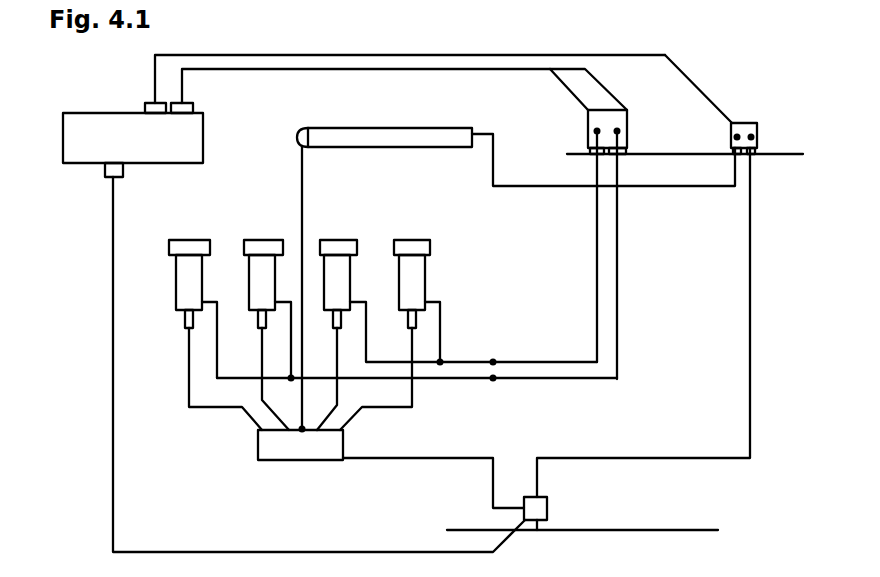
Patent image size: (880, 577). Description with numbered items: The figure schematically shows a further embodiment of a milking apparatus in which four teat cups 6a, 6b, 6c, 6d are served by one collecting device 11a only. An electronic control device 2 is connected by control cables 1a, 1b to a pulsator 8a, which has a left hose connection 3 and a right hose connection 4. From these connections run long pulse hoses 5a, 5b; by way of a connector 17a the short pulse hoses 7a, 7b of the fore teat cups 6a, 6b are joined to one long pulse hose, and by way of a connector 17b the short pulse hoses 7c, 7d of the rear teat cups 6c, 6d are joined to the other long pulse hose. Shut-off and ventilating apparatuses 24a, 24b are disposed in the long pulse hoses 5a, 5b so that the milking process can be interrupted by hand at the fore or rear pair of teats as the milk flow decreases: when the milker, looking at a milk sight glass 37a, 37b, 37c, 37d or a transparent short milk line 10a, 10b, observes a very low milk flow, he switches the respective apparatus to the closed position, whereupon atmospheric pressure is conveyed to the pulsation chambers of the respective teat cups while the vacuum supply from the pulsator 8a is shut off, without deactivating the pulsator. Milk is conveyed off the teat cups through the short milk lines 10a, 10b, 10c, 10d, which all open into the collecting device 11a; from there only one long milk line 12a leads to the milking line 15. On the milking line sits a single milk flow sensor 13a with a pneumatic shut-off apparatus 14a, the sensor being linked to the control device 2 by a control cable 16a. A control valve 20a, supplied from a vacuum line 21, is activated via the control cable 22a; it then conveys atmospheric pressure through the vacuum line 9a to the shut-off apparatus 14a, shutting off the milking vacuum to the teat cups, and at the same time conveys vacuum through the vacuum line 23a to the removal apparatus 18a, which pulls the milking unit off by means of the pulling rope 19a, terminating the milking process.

The electronic control device 2 is at (94, 120).
The control cable 22a is at (697, 87).
The control cable 1b is at (600, 85).
The control cable 1a is at (579, 102).
The hose connection pulsator L 3 is at (588, 132).
The hose connection pulsator R 4 is at (626, 151).
The pulsator 8a is at (590, 153).
The long pulse hose 5a is at (595, 218).
The long pulse hose 5b is at (615, 228).
The vacuum line 21 is at (772, 150).
The control valve 20a is at (743, 122).
The vacuum line 23a is at (494, 157).
The removal apparatus 18a is at (325, 135).
The pulling rope 19a is at (305, 198).
The teat cup 6a is at (190, 247).
The teat cup 6b is at (264, 247).
The teat cup 6c is at (339, 247).
The teat cup 6d is at (412, 247).
The milk sight glass 37a is at (184, 316).
The milk sight glass 37b is at (257, 317).
The milk sight glass 37c is at (332, 318).
The milk sight glass 37d is at (407, 317).
The short pulse hose 7a is at (217, 314).
The short pulse hose 7b is at (292, 318).
The short pulse hose 7c is at (367, 324).
The short pulse hose 7d is at (441, 326).
The connector pulse hose 17a is at (292, 381).
The connector pulse hose 17b is at (441, 365).
The shut-off and ventilation apparatus 24a is at (494, 360).
The shut-off and ventilation apparatus 24b is at (495, 381).
The short milk line 10a is at (186, 383).
The short milk line 10b is at (259, 369).
The short milk line 10c is at (326, 419).
The short milk line 10d is at (409, 388).
The volumetric collecting device 11a is at (287, 453).
The long milk line 12a is at (432, 452).
The vacuum line 9a is at (587, 458).
The milk flow sensor 13a is at (546, 503).
The shut-off apparatus 14a is at (562, 511).
The milking line 15 is at (633, 530).
The control cable 16a is at (505, 545).